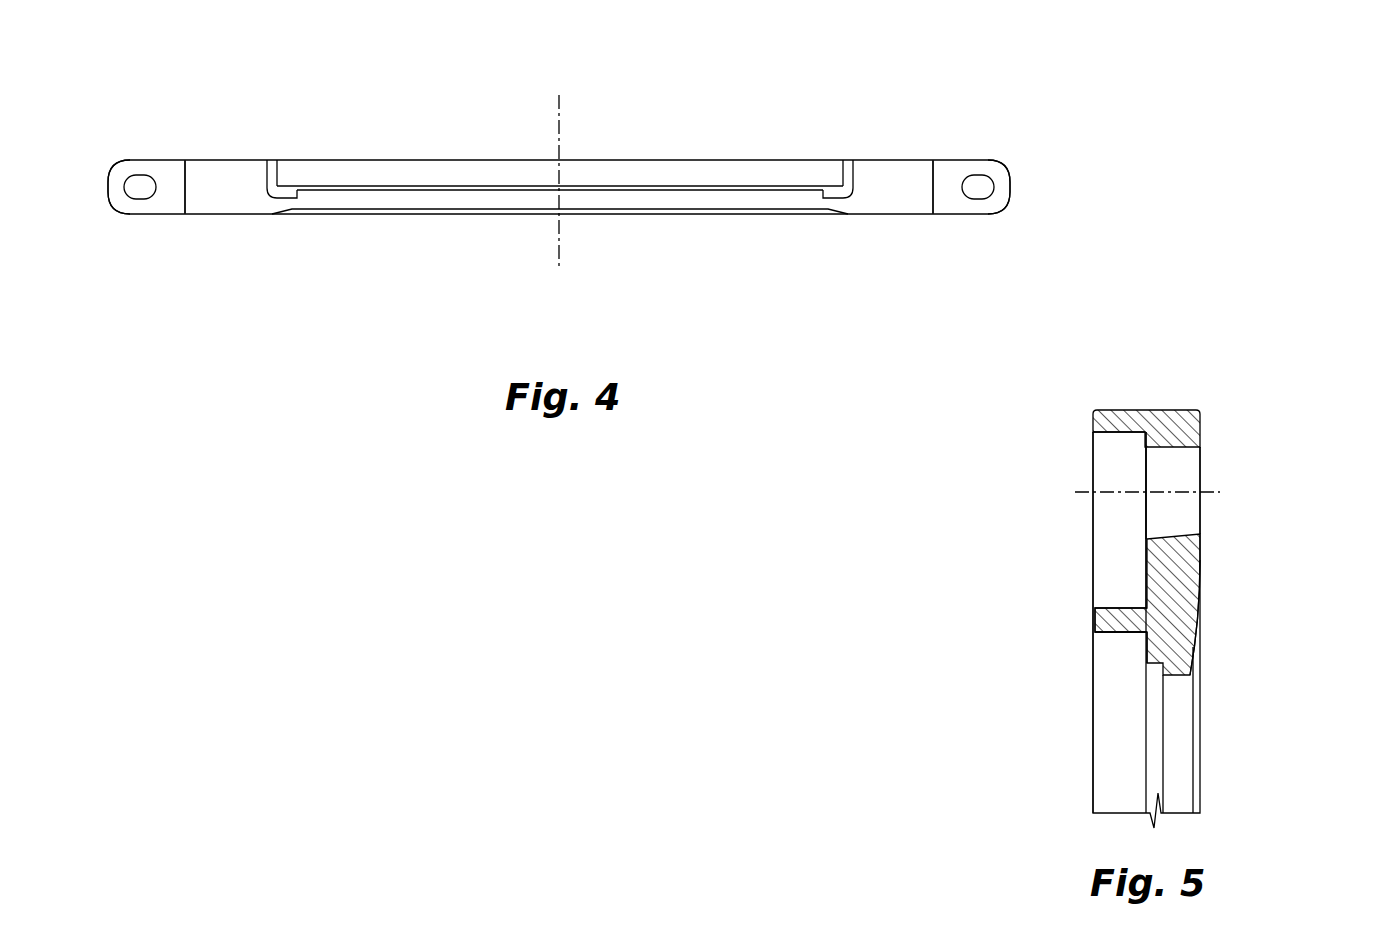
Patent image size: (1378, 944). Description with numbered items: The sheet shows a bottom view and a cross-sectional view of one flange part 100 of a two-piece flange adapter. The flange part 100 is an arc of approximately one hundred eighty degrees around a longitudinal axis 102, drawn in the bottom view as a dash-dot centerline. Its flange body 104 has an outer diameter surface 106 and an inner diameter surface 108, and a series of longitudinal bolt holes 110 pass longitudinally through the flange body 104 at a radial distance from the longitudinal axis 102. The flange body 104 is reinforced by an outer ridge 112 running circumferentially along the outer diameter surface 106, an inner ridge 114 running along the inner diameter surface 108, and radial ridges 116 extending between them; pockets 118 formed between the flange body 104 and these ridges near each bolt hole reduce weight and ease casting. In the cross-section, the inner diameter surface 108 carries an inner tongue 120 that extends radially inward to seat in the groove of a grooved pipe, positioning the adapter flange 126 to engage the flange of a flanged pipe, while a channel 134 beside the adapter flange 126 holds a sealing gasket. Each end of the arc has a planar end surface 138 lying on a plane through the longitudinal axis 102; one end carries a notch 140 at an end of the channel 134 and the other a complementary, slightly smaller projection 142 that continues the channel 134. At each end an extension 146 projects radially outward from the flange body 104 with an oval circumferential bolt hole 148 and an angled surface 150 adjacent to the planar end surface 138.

In FIG. 4, the flange part 100 is at (1058, 98).
In FIG. 4, the longitudinal axis 102 is at (560, 138).
In FIG. 5, the flange body 104 is at (1180, 562).
In FIG. 5, the outer diameter surface 106 is at (1172, 410).
In FIG. 4, the inner diameter surface 108 is at (803, 173).
In FIG. 5, the inner diameter surface 108 is at (1096, 636).
In FIG. 5, the longitudinal bolt holes 110 is at (1193, 467).
In FIG. 5, the outer ridge 112 is at (1113, 410).
In FIG. 5, the inner ridge 114 is at (1095, 622).
In FIG. 5, the radial ridges 116 is at (1115, 565).
In FIG. 5, the pockets 118 is at (1078, 468).
In FIG. 5, the inner tongue 120 is at (1195, 647).
In FIG. 5, the adapter flange 126 is at (1270, 373).
In FIG. 5, the channel 134 is at (1122, 648).
In FIG. 4, the planar end surface 138 is at (232, 162).
In FIG. 4, the notch 140 is at (272, 172).
In FIG. 4, the projection 142 is at (846, 170).
In FIG. 4, the extension 146 is at (133, 160).
In FIG. 4, the circumferential bolt hole 148 is at (143, 190).
In FIG. 4, the angled surface 150 is at (167, 203).